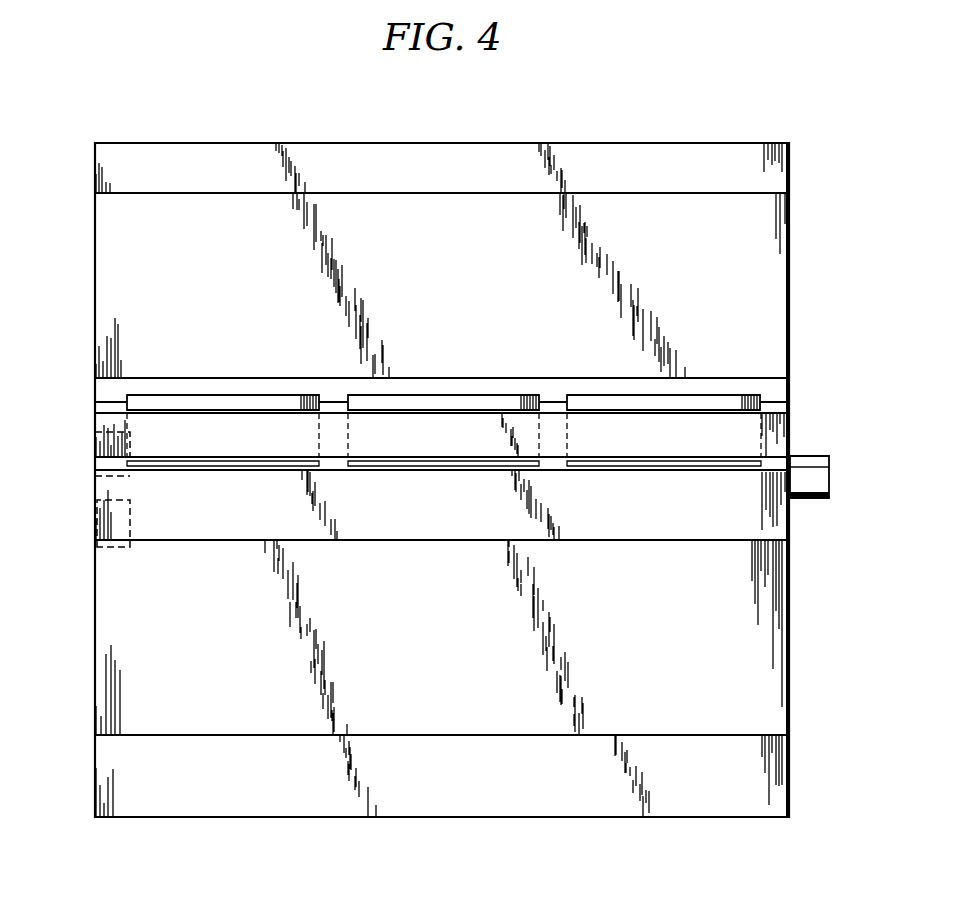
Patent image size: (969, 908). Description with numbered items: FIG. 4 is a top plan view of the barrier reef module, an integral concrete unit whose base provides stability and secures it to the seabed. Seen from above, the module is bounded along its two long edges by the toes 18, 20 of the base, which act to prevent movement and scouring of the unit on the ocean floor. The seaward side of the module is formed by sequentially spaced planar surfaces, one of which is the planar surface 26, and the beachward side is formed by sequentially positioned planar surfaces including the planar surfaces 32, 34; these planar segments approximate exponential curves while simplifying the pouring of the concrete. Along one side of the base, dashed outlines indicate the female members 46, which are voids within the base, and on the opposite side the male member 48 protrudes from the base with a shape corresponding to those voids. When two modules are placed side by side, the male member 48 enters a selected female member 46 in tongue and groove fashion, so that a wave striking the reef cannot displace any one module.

The toe 18 is at (404, 789).
The toe 20 is at (597, 173).
The planar surface 26 is at (609, 647).
The planar surface 32 is at (613, 298).
The planar surface 34 is at (777, 385).
The female member 46 is at (110, 518).
The male member 48 is at (814, 472).